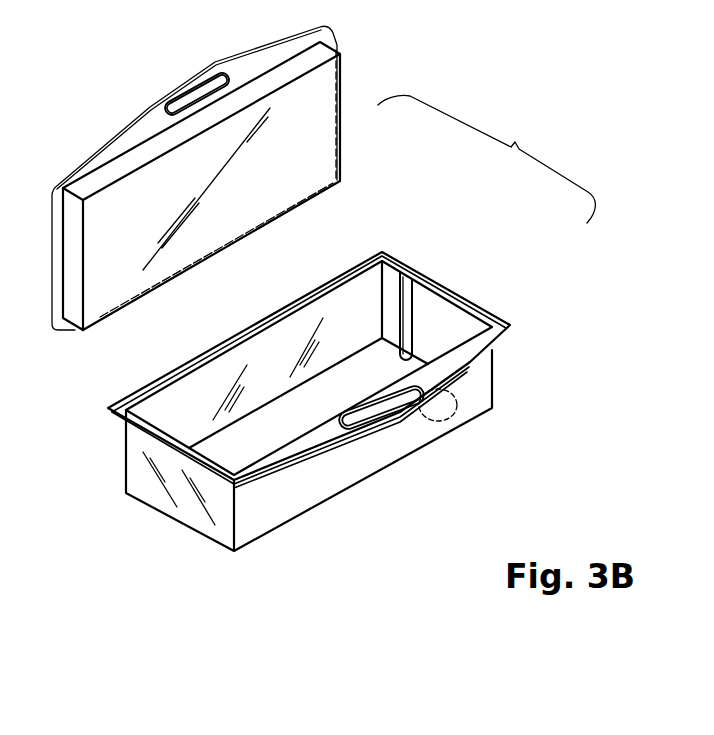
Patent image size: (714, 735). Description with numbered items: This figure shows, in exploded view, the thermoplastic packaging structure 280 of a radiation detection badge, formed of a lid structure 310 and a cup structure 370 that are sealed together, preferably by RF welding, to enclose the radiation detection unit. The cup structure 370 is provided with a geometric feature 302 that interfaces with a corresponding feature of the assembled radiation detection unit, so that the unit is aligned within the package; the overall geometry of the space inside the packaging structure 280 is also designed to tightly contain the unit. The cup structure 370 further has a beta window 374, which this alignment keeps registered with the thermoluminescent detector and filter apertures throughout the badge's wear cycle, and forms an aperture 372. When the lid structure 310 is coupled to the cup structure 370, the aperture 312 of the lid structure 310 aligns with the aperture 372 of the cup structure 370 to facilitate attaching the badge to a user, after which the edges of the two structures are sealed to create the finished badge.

The packaging structure 280 is at (486, 159).
The lid structure 310 is at (117, 110).
The aperture 312 is at (193, 93).
The cup structure 370 is at (382, 476).
The geometric feature 302 is at (406, 290).
The aperture 372 is at (373, 413).
The beta window 374 is at (455, 405).